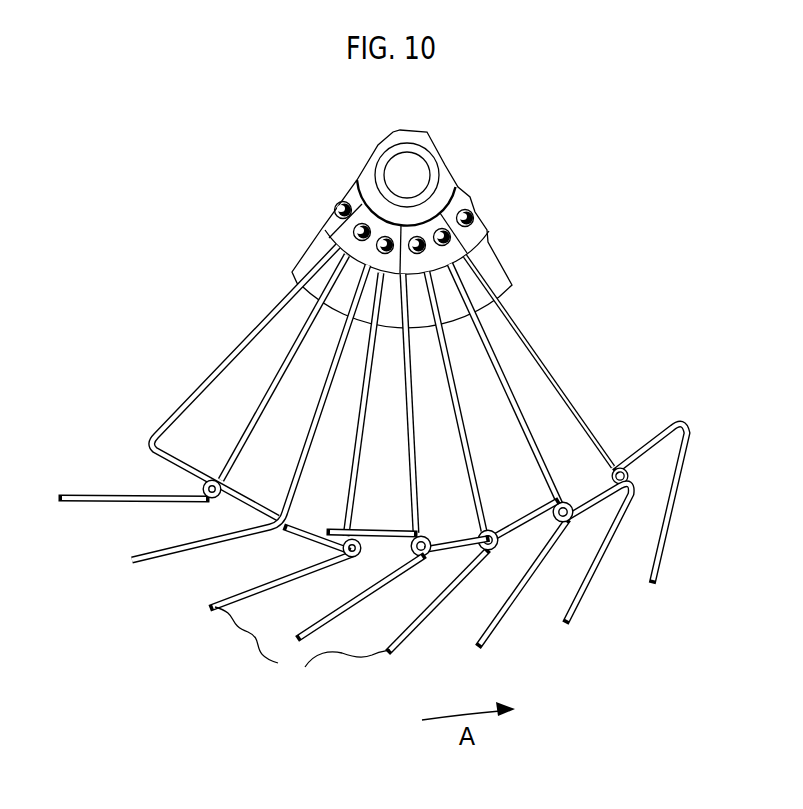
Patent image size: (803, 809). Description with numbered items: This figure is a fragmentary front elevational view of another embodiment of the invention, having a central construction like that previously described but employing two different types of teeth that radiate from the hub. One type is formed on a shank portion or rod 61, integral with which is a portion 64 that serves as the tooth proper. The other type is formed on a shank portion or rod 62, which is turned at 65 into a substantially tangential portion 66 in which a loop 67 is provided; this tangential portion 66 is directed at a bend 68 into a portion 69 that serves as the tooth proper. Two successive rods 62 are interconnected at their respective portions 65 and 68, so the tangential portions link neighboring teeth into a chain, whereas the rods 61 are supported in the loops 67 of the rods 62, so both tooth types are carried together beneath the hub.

The shank portion or rod 61 is at (477, 494).
The shank portion or rod 62 is at (412, 458).
The tooth portion 64 is at (302, 645).
The turn 65 is at (278, 523).
The tangential portion 66 is at (310, 537).
The loop 67 is at (355, 554).
The bend 68 is at (425, 539).
The tooth portion 69 is at (337, 613).